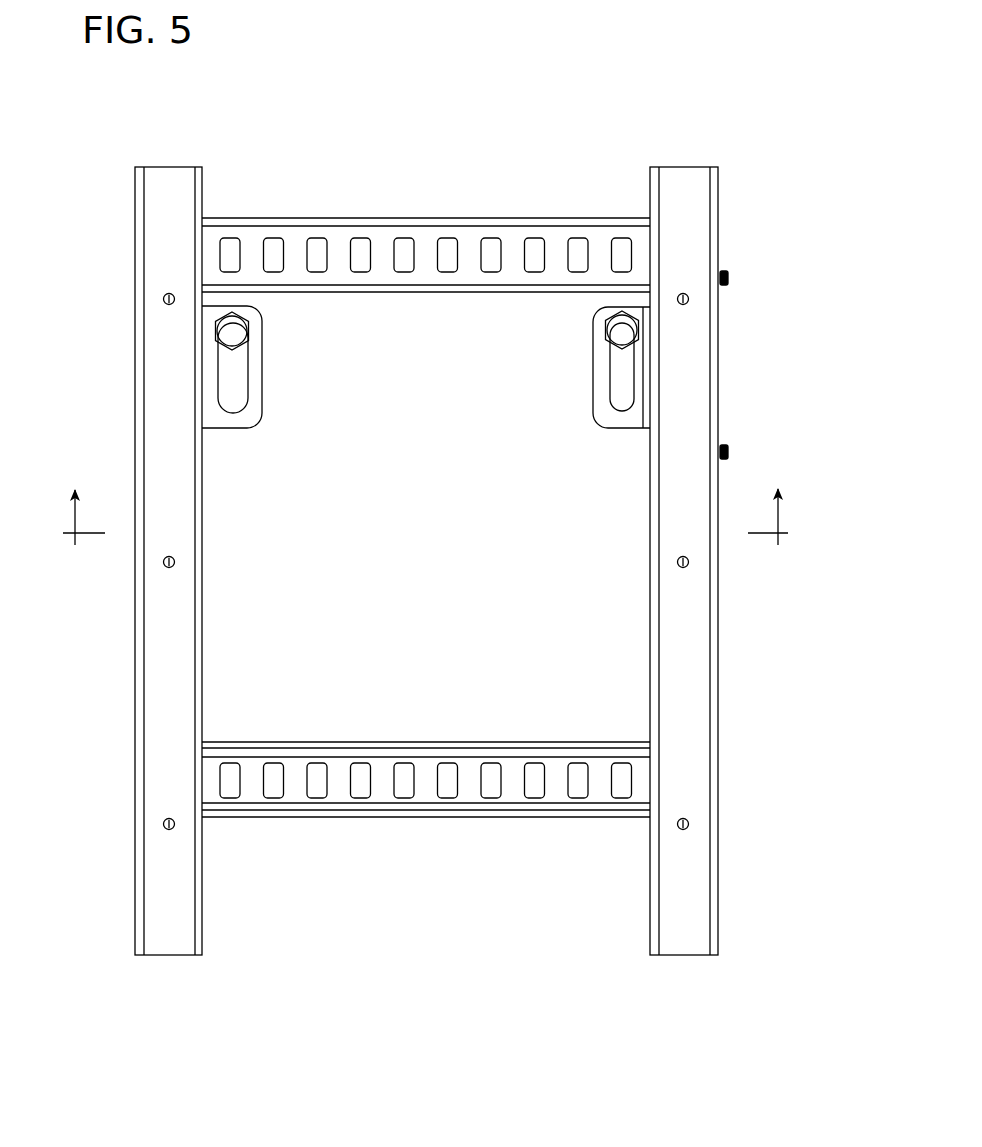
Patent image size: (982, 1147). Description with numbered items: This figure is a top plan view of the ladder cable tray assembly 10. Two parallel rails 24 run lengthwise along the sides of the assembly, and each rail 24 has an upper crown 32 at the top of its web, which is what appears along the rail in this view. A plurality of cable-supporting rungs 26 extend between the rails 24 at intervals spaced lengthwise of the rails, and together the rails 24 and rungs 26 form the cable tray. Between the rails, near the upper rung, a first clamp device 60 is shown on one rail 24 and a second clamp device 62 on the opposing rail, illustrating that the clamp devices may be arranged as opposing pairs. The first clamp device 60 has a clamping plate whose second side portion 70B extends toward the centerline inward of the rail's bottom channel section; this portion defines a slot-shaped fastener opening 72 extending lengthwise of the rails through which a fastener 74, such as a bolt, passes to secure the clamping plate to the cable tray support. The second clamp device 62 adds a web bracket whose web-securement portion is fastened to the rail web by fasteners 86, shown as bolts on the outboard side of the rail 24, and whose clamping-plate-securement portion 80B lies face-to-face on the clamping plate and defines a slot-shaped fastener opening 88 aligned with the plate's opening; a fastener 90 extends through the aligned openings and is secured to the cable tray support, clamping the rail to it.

The cable tray assembly 10 is at (746, 103).
The rail 24 is at (430, 561).
The cable-supporting rung 26 is at (427, 240).
The upper crown 32 is at (168, 617).
The first clamp device 60 is at (283, 396).
The second clamp device 62 is at (580, 395).
The second side portion 70B is at (208, 415).
The fastener opening 72 is at (233, 387).
The fastener 74 is at (237, 334).
The clamping-plate-securement portion 80B is at (612, 418).
The fastener 86 is at (730, 278).
The fastener opening 88 is at (620, 376).
The fastener 90 is at (617, 330).